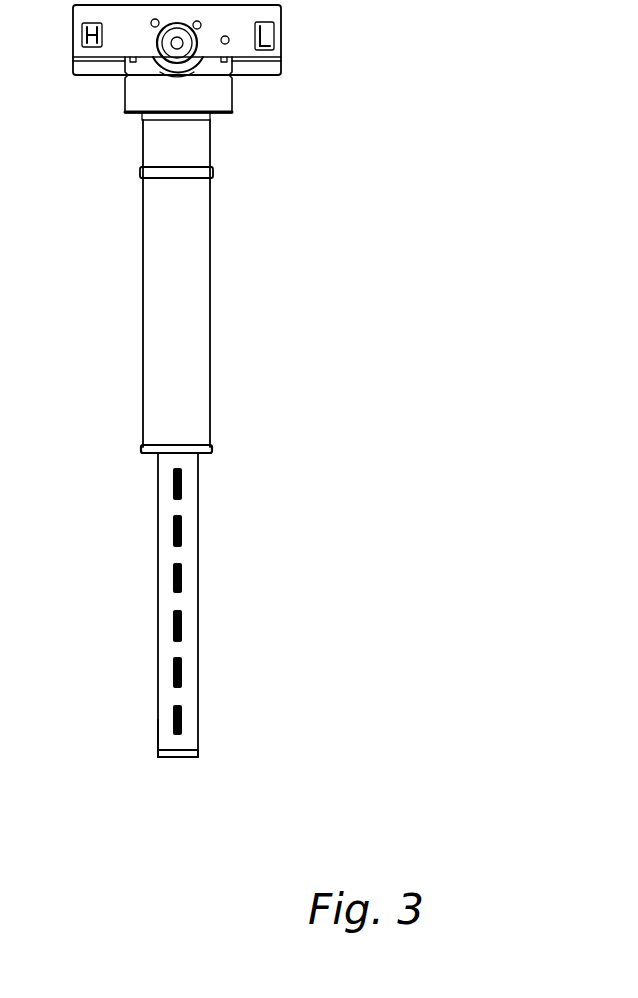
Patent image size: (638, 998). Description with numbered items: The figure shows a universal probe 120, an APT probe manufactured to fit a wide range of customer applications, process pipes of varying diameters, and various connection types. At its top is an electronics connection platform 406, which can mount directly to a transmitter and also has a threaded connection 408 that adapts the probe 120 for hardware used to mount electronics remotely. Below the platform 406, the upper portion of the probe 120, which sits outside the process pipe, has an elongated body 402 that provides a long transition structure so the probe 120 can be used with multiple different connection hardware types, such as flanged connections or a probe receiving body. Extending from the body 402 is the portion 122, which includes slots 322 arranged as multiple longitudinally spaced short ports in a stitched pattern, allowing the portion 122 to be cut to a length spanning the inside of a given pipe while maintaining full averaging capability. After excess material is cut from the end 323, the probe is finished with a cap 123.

The universal probe 120 is at (366, 248).
The portion 122 is at (198, 530).
The cap 123 is at (180, 748).
The slots 322 is at (180, 622).
The end 323 is at (139, 783).
The elongated body 402 is at (145, 293).
The electronics connection platform 406 is at (123, 85).
The threaded connection 408 is at (200, 118).